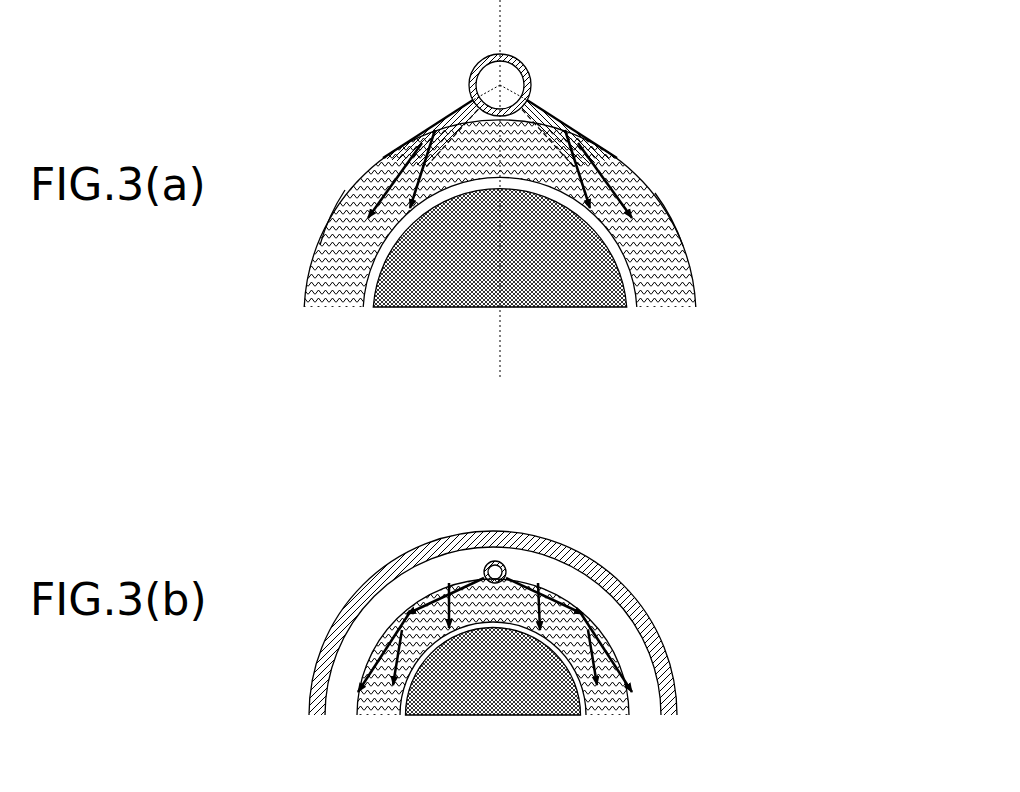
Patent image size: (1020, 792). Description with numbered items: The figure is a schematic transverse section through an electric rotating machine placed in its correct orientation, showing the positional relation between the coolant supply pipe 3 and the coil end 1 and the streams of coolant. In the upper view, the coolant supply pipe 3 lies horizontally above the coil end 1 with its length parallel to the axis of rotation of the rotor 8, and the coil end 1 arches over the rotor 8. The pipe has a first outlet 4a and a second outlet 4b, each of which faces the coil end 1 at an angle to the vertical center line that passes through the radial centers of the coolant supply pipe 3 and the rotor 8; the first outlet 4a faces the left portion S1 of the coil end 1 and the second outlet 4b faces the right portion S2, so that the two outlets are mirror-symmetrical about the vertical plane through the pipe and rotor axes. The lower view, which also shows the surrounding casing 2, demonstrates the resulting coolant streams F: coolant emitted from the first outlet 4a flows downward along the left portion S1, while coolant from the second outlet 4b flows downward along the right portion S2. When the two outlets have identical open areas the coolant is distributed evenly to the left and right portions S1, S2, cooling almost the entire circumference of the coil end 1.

In FIG. 3A, the coil end 1 is at (668, 305).
In FIG. 3B, the coil end 1 is at (592, 617).
In FIG. 3B, the casing 2 is at (662, 645).
In FIG. 3A, the coolant supply pipe 3 is at (522, 63).
In FIG. 3B, the coolant supply pipe 3 is at (505, 565).
In FIG. 3A, the first outlet 4a is at (472, 100).
In FIG. 3B, the first outlet 4a is at (445, 596).
In FIG. 3A, the second outlet 4b is at (528, 100).
In FIG. 3B, the second outlet 4b is at (544, 596).
In FIG. 3A, the rotor 8 is at (566, 306).
In FIG. 3B, the rotor 8 is at (495, 718).
In FIG. 3A, the pressing force F is at (378, 165).
In FIG. 3B, the pressing force F is at (440, 605).
In FIG. 3A, the left portion of the coil end S1 is at (326, 220).
In FIG. 3A, the right portion of the coil end S2 is at (653, 193).